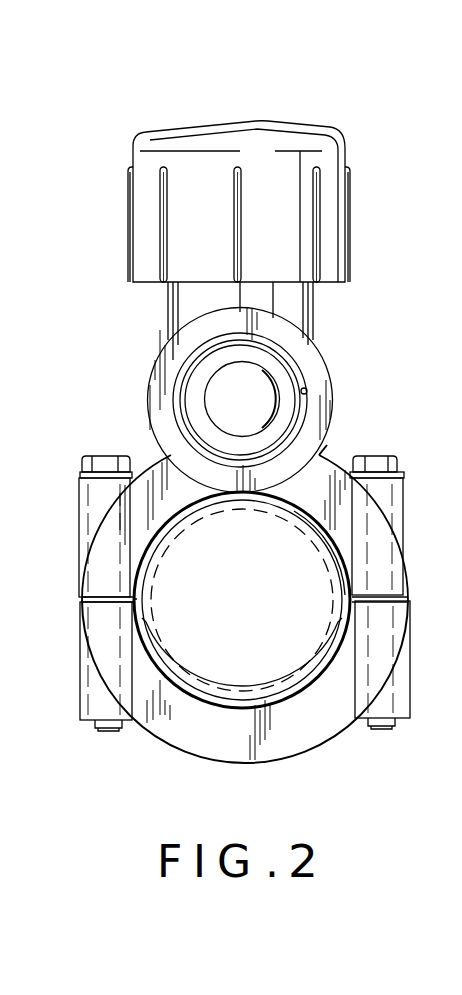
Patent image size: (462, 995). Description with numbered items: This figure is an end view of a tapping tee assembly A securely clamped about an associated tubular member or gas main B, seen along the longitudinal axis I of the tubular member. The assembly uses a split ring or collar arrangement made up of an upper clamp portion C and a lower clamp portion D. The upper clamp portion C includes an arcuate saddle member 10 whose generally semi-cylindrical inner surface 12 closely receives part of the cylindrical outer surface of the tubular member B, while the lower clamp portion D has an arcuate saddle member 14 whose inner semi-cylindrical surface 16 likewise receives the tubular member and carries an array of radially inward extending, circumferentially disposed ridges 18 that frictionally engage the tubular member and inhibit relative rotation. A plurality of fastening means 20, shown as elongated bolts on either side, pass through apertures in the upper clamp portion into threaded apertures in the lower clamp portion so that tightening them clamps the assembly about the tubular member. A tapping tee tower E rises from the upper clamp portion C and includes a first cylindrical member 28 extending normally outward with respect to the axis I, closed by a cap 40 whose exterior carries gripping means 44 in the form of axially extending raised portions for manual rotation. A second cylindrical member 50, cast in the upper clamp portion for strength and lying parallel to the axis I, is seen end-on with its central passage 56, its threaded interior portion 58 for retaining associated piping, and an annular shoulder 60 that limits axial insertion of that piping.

The arcuate saddle member 10 is at (132, 537).
The semi-cylindrical inner surface 12 is at (302, 510).
The arcuate saddle member 14 is at (338, 683).
The inner semi-cylindrical surface 16 is at (350, 617).
The ridges 18 is at (158, 663).
The fastening means 20 is at (100, 466).
The first cylindrical member 28 is at (180, 303).
The cap 40 is at (335, 152).
The gripping means 44 is at (316, 224).
The second cylindrical member 50 is at (313, 360).
The central passage 56 is at (307, 389).
The threaded interior portion 58 is at (183, 393).
The annular shoulder 60 is at (283, 379).
The tapping tee assembly A is at (146, 745).
The tubular member B is at (215, 686).
The upper clamp portion C is at (335, 446).
The lower clamp portion D is at (348, 753).
The tapping tee tower E is at (322, 324).
The longitudinal axis I is at (0, 598).